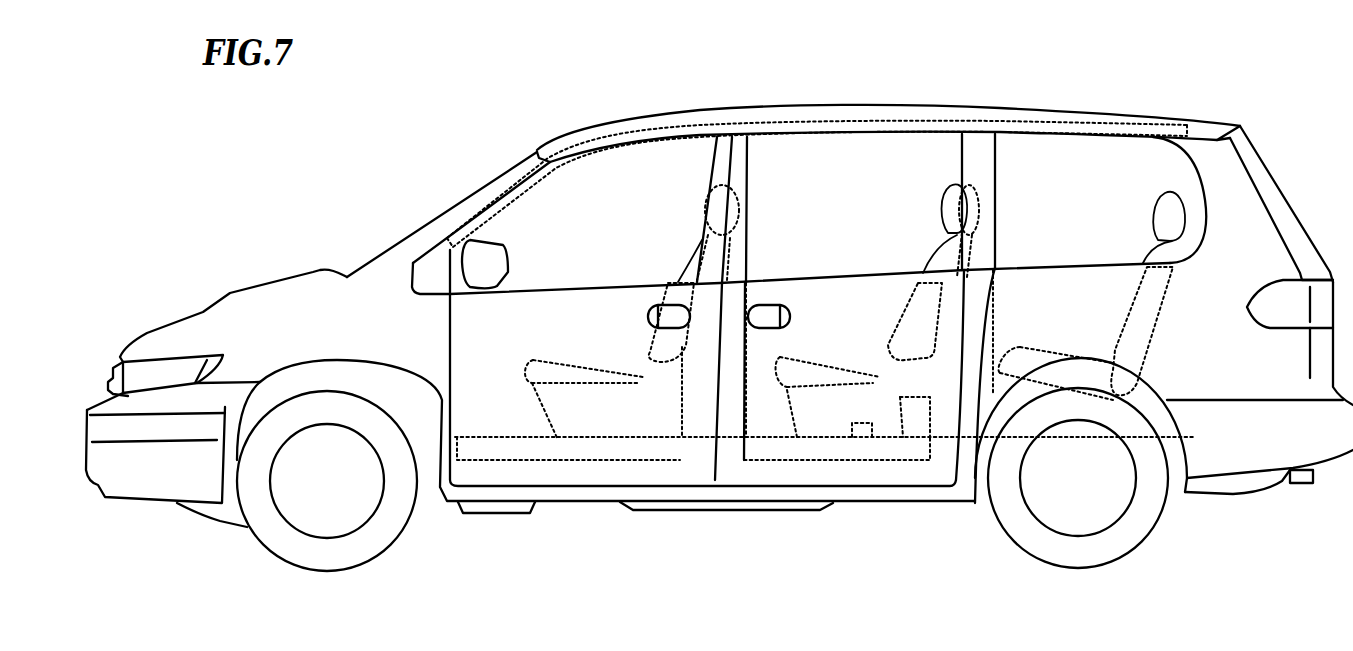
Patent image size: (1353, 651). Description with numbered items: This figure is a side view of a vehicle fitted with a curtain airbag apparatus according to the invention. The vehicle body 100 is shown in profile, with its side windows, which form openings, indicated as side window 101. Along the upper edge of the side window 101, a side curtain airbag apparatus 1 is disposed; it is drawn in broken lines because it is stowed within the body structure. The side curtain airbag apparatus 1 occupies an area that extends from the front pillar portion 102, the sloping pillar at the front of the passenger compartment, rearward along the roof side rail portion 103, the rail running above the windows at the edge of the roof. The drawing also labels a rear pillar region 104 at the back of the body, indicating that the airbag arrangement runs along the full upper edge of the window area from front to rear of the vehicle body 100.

The side curtain airbag apparatus 1 is at (877, 118).
The vehicle body 100 is at (243, 298).
The side window 101 is at (633, 173).
The front pillar portion 102 is at (453, 230).
The roof side rail portion 103 is at (975, 107).
The rear pillar 104 is at (1235, 192).